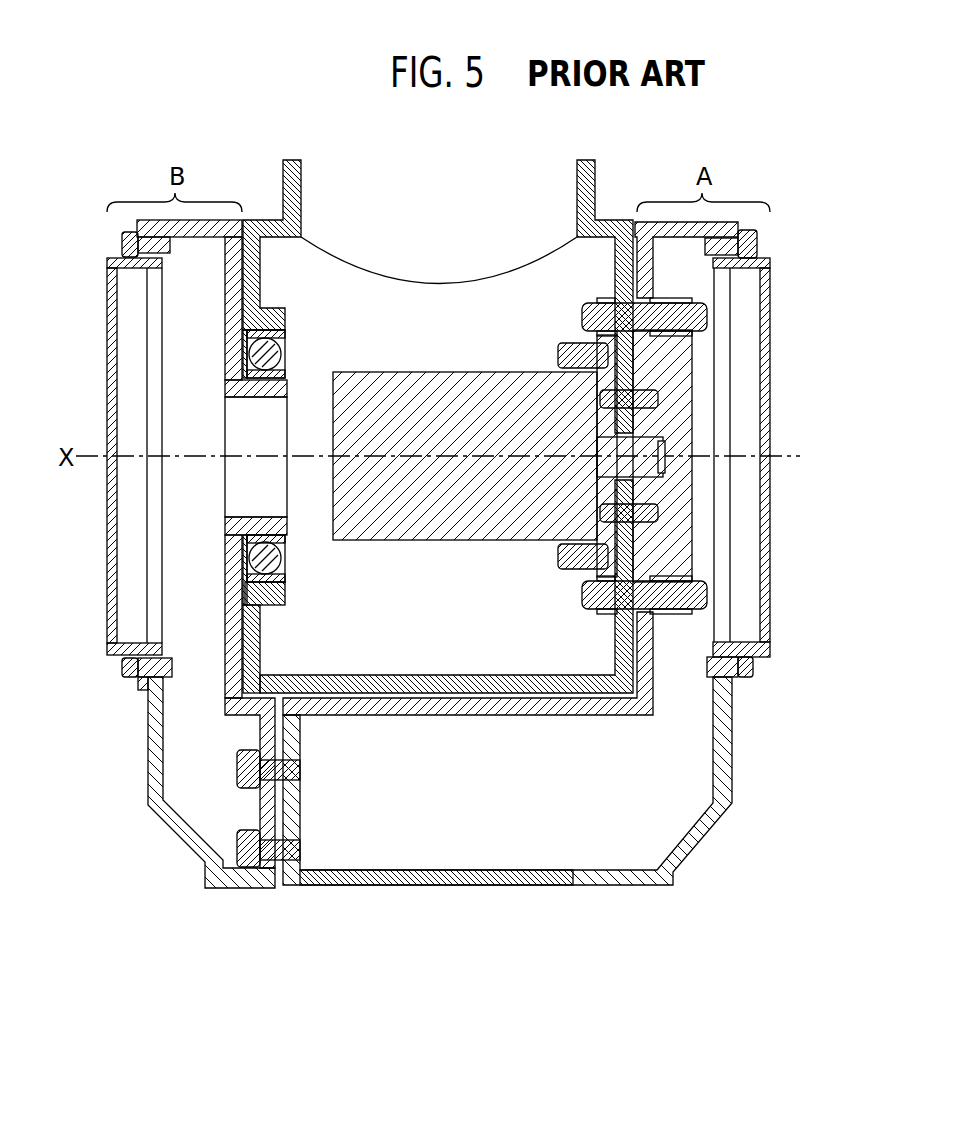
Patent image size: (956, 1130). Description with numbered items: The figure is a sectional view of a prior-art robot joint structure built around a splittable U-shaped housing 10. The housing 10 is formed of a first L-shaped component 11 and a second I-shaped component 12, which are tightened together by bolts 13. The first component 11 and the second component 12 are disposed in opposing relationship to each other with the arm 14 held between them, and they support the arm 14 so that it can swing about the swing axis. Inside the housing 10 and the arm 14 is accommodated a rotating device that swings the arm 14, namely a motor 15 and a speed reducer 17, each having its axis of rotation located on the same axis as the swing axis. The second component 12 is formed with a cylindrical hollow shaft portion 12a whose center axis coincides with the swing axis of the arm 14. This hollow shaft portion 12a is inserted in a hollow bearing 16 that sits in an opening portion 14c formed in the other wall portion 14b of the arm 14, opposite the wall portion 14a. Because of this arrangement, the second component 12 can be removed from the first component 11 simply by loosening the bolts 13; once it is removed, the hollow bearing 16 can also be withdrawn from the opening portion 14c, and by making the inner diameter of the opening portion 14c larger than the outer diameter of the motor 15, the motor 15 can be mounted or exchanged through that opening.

The U-shaped housing 10 is at (582, 1014).
The first L-shaped component 11 is at (595, 886).
The second I-shaped component 12 is at (268, 886).
The hollow shaft portion 12a is at (292, 376).
The bolts 13 is at (237, 789).
The arm 14 is at (280, 198).
The wall portion of the arm 14a is at (626, 660).
The other wall portion 14b is at (262, 644).
The opening portion 14c is at (284, 581).
The motor 15 is at (486, 522).
The hollow bearing 16 is at (268, 562).
The speed reducer 17 is at (704, 436).